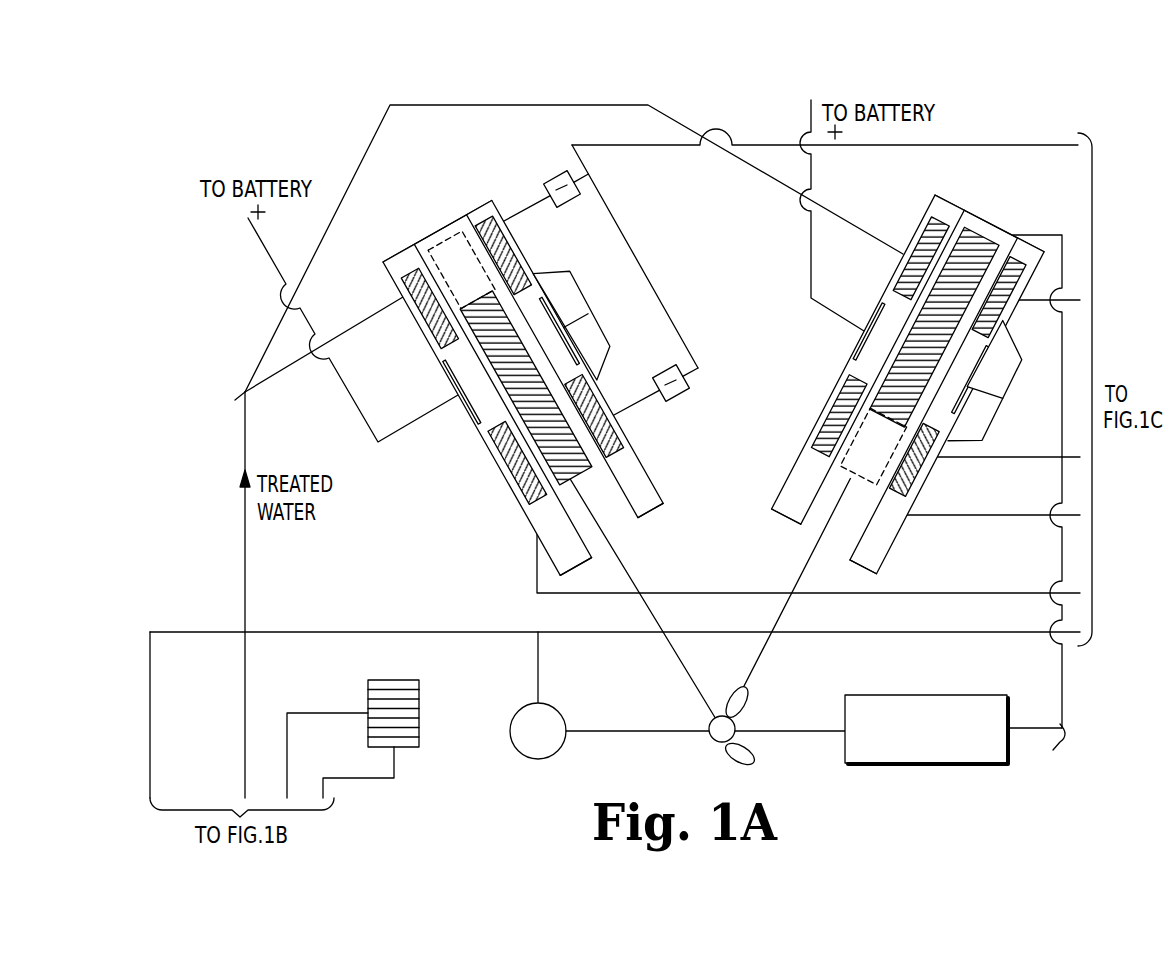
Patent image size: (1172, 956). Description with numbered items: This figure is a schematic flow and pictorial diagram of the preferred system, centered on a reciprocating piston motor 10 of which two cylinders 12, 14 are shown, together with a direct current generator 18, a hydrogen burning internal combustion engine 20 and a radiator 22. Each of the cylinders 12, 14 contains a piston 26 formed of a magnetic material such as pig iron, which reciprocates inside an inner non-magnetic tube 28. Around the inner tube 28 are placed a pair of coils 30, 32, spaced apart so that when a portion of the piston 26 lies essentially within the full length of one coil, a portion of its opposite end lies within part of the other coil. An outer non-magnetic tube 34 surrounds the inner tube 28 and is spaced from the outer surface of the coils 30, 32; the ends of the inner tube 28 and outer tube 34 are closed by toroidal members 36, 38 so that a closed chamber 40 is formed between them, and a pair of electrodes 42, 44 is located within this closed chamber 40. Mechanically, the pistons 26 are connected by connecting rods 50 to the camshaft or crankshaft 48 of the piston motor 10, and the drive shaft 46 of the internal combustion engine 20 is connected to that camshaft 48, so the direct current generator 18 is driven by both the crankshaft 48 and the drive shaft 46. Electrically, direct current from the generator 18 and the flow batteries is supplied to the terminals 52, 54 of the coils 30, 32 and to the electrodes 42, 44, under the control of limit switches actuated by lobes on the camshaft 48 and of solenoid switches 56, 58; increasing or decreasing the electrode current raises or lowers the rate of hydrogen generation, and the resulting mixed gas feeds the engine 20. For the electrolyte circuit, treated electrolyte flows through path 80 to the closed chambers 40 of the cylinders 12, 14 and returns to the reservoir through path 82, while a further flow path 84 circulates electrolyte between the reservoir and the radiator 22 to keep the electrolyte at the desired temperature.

The reciprocating piston motor 10 is at (762, 288).
The cylinder 12 is at (453, 190).
The cylinder 14 is at (1017, 207).
The direct current generator 18 is at (572, 694).
The hydrogen burning internal combustion engine 20 is at (917, 780).
The radiator 22 is at (422, 700).
The piston 26 is at (476, 298).
The inner non-magnetic tube 28 is at (420, 247).
The coil 30 is at (1030, 348).
The coil 32 is at (606, 410).
The outer non-magnetic tube 34 is at (518, 507).
The toroidal member 36 is at (492, 200).
The toroidal member 38 is at (578, 566).
The closed chamber 40 is at (657, 503).
The electrode 42 is at (467, 412).
The electrode 44 is at (562, 325).
The drive shaft 46 is at (808, 733).
The camshaft 48 is at (768, 694).
The connecting rod 50 is at (638, 582).
The terminal 52 is at (497, 221).
The terminal 54 is at (617, 420).
The solenoid switch 56 is at (563, 172).
The solenoid switch 58 is at (683, 388).
The flow path 80 is at (362, 323).
The flow path 82 is at (973, 518).
The flow path 84 is at (316, 712).